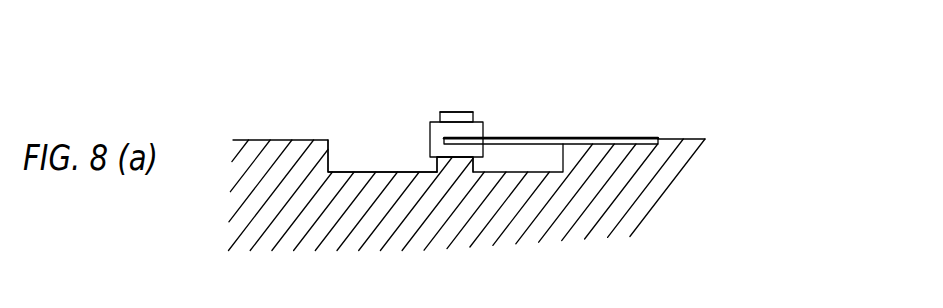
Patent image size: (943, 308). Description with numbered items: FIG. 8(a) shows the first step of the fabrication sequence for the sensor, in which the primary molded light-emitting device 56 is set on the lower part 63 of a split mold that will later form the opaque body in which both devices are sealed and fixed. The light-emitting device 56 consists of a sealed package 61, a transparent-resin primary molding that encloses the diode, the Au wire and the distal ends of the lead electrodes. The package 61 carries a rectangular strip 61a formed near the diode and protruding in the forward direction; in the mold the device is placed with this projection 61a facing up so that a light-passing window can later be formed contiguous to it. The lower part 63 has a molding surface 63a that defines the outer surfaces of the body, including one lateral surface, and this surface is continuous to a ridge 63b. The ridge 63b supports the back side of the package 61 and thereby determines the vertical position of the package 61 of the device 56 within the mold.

The light-emitting device 56 is at (472, 97).
The sealed package 61 is at (487, 123).
The rectangular strip 61a is at (440, 112).
The lower part 63 is at (647, 188).
The molding surface 63a is at (361, 173).
The ridge 63b is at (451, 174).